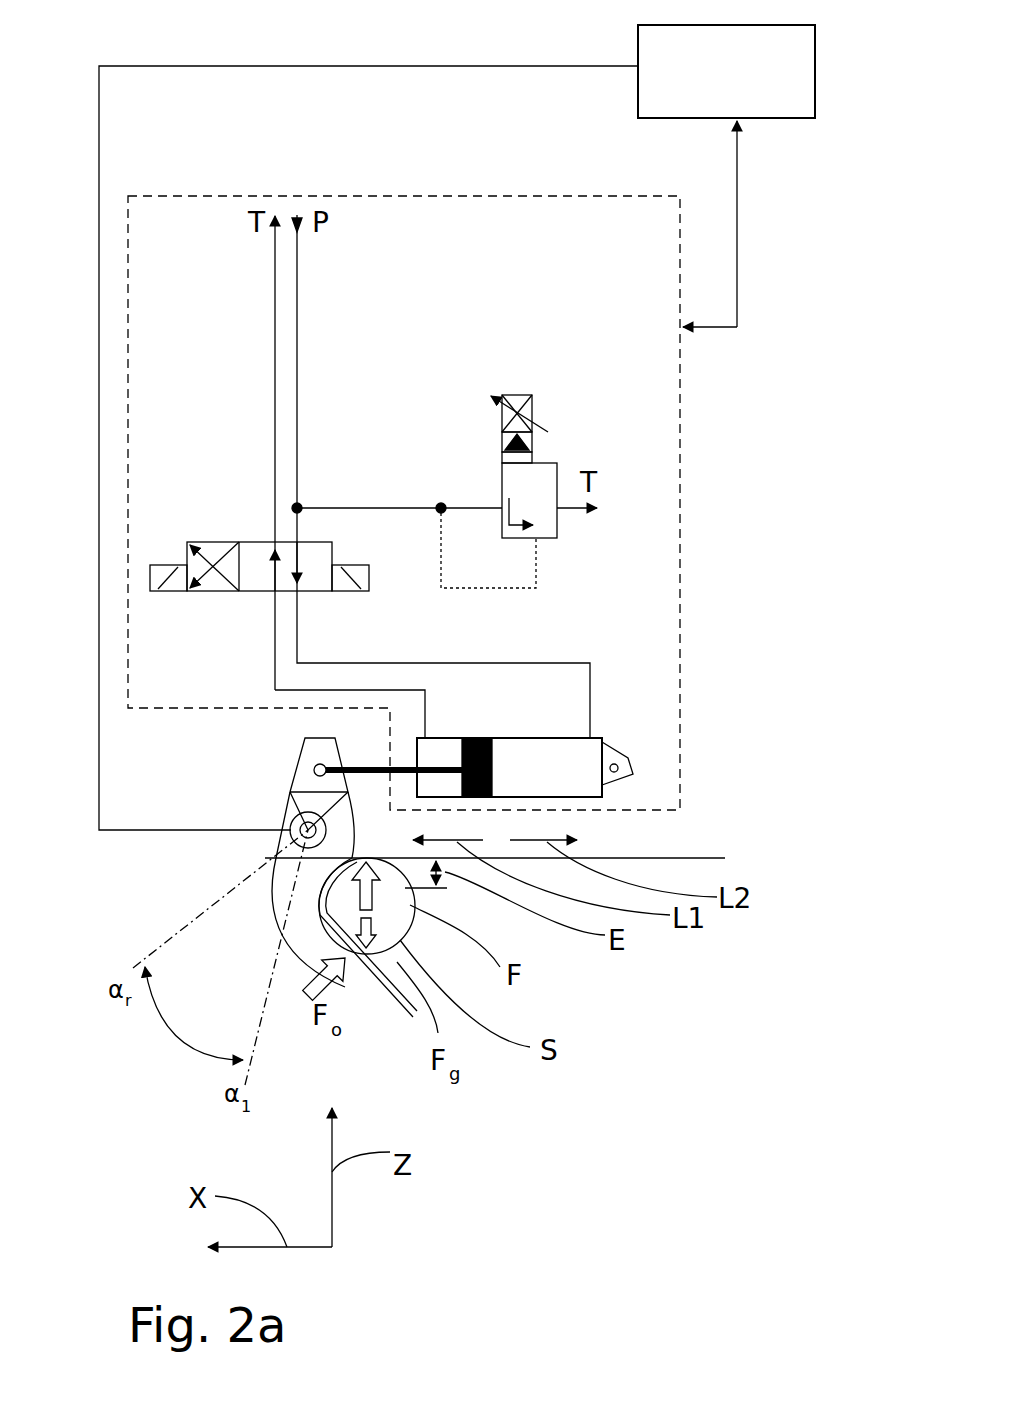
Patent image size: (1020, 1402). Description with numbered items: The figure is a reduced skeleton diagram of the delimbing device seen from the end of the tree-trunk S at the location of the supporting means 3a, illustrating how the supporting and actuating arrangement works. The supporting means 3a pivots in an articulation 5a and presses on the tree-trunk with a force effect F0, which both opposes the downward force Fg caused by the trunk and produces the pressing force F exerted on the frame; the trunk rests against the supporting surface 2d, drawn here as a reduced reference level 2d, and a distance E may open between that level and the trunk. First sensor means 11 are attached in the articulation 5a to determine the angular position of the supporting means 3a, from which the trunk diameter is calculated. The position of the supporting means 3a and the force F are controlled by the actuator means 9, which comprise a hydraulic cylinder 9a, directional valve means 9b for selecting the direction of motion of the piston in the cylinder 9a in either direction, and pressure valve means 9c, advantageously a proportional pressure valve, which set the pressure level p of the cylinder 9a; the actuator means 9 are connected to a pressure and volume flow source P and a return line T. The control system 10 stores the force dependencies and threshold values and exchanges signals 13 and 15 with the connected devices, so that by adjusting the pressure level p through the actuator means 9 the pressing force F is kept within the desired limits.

The signal 13 is at (290, 66).
The control system 10 is at (780, 118).
The signal 15 is at (712, 327).
The actuator means 9 is at (485, 197).
The directional valve means 9b is at (248, 542).
The pressure valve means 9c is at (527, 383).
The hydraulic cylinder 9a is at (600, 740).
The pressure level p is at (587, 787).
The articulation 5a is at (292, 797).
The first sensor means 11 is at (262, 851).
The supporting surface 2d is at (697, 857).
The supporting means 3a is at (365, 985).